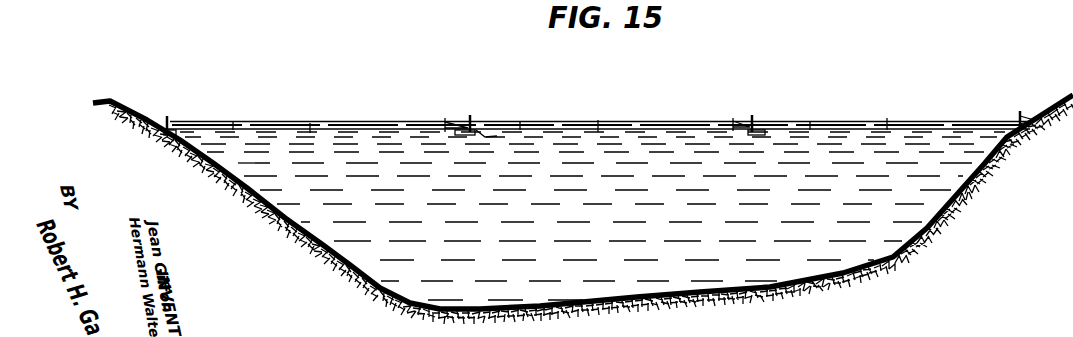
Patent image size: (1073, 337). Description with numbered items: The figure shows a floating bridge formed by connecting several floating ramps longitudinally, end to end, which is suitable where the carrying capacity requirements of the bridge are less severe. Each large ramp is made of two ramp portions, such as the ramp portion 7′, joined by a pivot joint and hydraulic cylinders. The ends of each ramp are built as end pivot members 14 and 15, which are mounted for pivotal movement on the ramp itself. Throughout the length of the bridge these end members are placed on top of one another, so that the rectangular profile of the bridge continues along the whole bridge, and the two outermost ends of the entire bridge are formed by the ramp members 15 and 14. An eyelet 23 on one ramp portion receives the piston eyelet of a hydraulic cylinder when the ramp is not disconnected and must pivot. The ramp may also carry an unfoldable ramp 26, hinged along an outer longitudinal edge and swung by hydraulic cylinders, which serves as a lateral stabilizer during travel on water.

The end pivot member 14 is at (468, 118).
The end pivot member 15 is at (167, 124).
The eyelet 23 is at (478, 135).
The unfoldable ramp 26 is at (209, 124).
The ramp portion 7′ is at (359, 127).